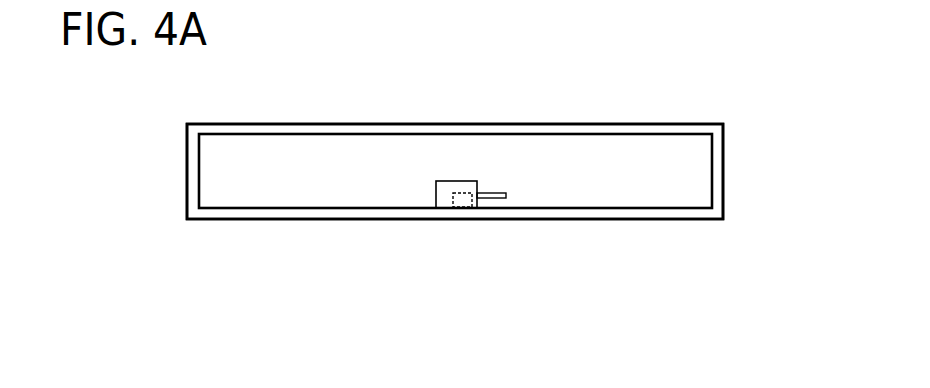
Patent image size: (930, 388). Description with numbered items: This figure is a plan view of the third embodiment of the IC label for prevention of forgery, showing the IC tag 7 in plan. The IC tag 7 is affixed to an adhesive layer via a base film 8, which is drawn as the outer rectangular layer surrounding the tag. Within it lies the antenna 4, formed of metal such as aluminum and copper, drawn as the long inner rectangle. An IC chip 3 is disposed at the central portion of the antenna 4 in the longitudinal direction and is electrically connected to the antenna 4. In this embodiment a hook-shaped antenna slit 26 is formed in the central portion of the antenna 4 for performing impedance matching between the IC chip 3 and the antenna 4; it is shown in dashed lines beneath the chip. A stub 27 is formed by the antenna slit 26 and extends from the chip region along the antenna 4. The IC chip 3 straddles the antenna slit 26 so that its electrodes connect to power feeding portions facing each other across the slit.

The IC tag 7 is at (163, 185).
The base film 8 is at (718, 152).
The antenna 4 is at (699, 173).
The IC chip 3 is at (435, 191).
The antenna slit 26 is at (468, 200).
The stub 27 is at (495, 202).